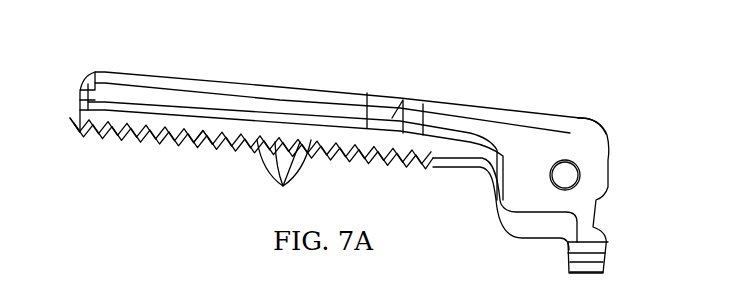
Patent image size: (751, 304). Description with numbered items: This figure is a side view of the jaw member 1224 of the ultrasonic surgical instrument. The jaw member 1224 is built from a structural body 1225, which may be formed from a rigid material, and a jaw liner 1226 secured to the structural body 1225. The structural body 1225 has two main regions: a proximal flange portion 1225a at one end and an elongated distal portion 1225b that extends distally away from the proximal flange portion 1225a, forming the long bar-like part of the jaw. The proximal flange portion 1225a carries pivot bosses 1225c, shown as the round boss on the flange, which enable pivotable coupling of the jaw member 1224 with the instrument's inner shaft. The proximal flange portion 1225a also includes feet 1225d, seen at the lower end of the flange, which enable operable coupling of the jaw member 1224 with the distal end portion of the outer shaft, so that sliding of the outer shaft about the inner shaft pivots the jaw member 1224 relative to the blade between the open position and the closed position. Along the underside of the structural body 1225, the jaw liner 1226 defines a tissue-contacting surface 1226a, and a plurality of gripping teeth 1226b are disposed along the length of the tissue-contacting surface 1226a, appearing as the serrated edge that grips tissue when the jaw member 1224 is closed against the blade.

The jaw member 1224 is at (607, 70).
The structural body 1225 is at (303, 80).
The proximal flange portion 1225a is at (558, 138).
The elongated distal portion 1225b is at (343, 100).
The pivot bosses 1225c is at (565, 172).
The feet 1225d is at (605, 243).
The jaw liner 1226 is at (152, 150).
The tissue-contacting surface 1226a is at (208, 142).
The gripping teeth 1226b is at (284, 188).